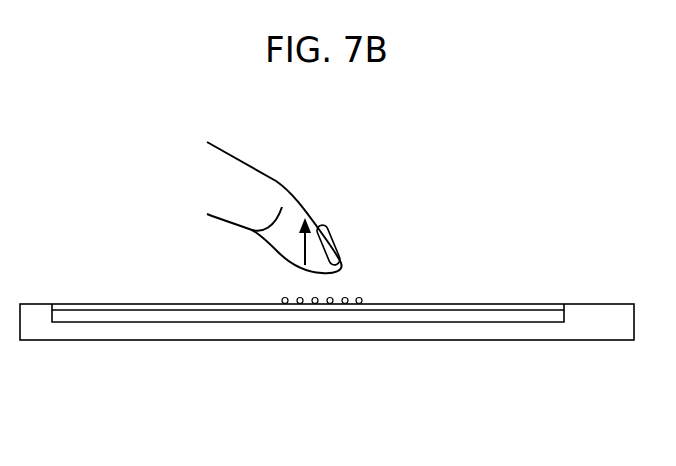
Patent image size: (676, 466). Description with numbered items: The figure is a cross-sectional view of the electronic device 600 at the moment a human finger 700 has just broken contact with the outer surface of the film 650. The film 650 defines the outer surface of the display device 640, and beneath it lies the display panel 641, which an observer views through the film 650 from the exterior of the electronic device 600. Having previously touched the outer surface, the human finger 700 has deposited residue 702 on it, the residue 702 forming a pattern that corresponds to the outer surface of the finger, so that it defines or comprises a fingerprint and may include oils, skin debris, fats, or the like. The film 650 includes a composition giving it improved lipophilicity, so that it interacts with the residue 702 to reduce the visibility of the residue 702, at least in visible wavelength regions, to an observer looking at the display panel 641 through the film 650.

The electronic device 600 is at (70, 343).
The display device 640 is at (308, 372).
The display panel 641 is at (125, 315).
The film 650 is at (177, 305).
The human finger 700 is at (238, 208).
The residue 702 is at (352, 287).